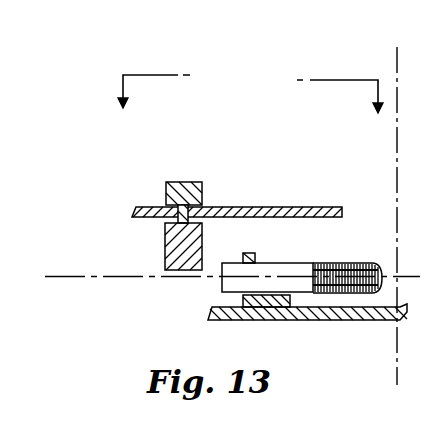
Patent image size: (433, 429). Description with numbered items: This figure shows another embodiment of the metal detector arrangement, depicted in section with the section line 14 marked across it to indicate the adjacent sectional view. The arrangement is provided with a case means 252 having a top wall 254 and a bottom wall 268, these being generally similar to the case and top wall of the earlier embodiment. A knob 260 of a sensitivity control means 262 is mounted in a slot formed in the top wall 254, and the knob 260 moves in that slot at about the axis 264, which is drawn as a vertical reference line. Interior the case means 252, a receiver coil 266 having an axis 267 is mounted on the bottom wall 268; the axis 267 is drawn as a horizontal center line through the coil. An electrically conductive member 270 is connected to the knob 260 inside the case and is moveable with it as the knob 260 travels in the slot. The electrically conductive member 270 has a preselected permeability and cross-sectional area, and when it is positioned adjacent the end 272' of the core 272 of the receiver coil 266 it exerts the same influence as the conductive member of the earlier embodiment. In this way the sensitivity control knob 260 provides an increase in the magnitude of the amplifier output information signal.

The section line 14 is at (250, 104).
The case means 252 is at (248, 320).
The top wall 254 is at (283, 207).
The knob 260 is at (174, 196).
The sensitivity control means 262 is at (184, 182).
The axis 264 is at (397, 50).
The receiver coil 266 is at (231, 263).
The axis 267 is at (73, 276).
The bottom wall 268 is at (312, 320).
The electrically conductive member 270 is at (165, 250).
The core 272 is at (347, 261).
The end of core 272' is at (214, 294).